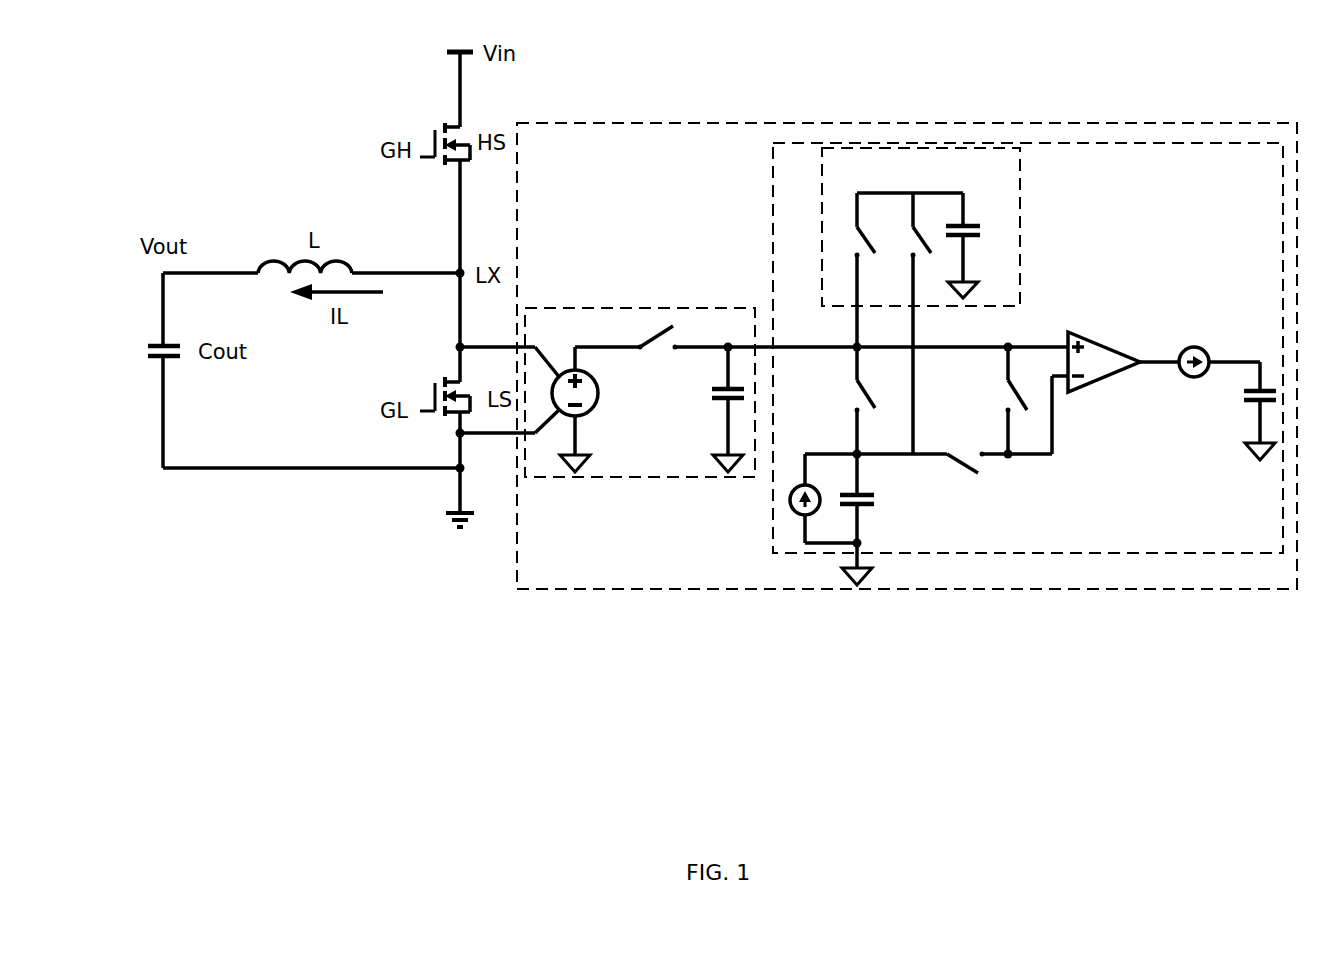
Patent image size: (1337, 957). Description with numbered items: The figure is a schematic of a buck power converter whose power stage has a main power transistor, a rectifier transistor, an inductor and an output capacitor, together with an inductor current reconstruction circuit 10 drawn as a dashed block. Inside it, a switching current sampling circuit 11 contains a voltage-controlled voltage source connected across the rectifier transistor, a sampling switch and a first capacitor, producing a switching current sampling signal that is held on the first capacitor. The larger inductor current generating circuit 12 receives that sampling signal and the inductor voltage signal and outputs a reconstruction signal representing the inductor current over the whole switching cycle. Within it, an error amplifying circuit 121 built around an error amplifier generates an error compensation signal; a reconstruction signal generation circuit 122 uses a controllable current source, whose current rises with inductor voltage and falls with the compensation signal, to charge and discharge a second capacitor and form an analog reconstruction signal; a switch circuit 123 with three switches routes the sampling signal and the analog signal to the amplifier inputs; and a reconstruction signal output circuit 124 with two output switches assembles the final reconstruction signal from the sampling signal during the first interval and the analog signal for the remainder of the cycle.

The inductor current reconstruction circuit 10 is at (820, 122).
The switching current sampling circuit 11 is at (575, 477).
The inductor current generating circuit 12 is at (773, 218).
The error amplifying circuit 121 is at (1100, 390).
The reconstruction signal generation circuit 122 is at (876, 522).
The switch circuit 123 is at (926, 408).
The reconstruction signal output circuit 124 is at (1020, 232).